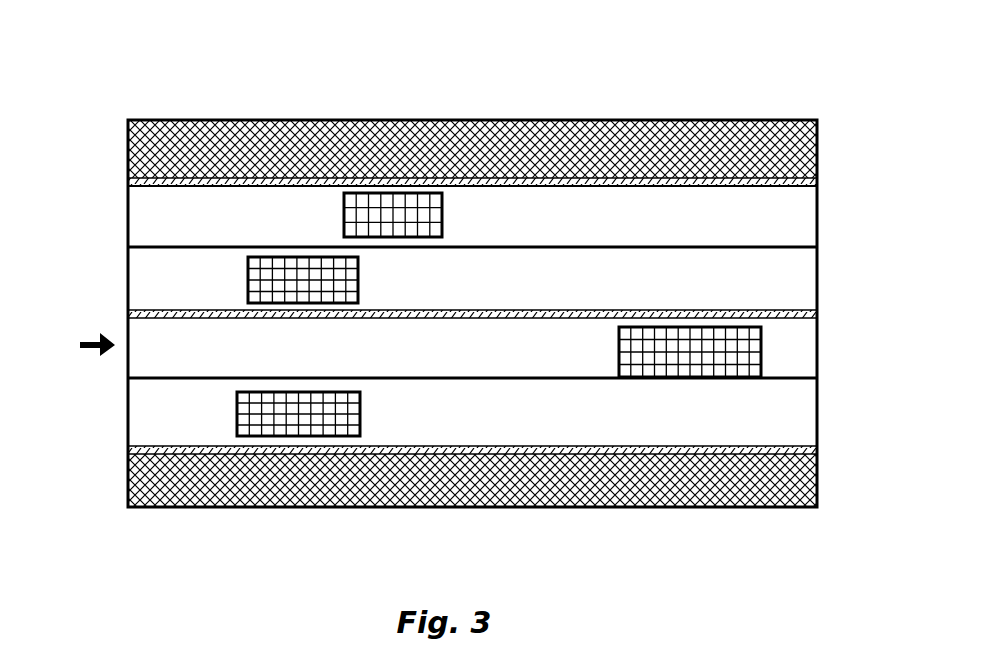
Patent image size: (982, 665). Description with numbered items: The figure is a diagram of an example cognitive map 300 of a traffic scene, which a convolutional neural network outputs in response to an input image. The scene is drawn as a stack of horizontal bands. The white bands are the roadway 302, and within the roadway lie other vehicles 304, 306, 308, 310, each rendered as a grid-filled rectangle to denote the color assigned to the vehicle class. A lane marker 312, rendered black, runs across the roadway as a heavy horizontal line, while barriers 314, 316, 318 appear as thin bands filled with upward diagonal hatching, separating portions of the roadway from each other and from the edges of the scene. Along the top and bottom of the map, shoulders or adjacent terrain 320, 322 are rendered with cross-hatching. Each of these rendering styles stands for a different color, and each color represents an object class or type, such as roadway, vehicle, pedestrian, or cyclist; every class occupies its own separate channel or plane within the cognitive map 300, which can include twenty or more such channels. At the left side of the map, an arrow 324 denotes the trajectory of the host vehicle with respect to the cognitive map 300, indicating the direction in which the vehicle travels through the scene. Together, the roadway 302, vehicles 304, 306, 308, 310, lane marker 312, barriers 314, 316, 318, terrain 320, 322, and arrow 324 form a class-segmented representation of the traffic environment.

The cognitive map 300 is at (432, 28).
The roadway 302 is at (168, 217).
The other vehicle 304 is at (248, 275).
The other vehicle 306 is at (344, 216).
The other vehicle 308 is at (237, 417).
The other vehicle 310 is at (619, 353).
The lane marker 312 is at (157, 379).
The barrier 314 is at (128, 314).
The barrier 316 is at (818, 181).
The barrier 318 is at (818, 450).
The shoulder or adjacent terrain 320 is at (818, 124).
The shoulder or adjacent terrain 322 is at (818, 500).
The arrow 324 is at (89, 352).